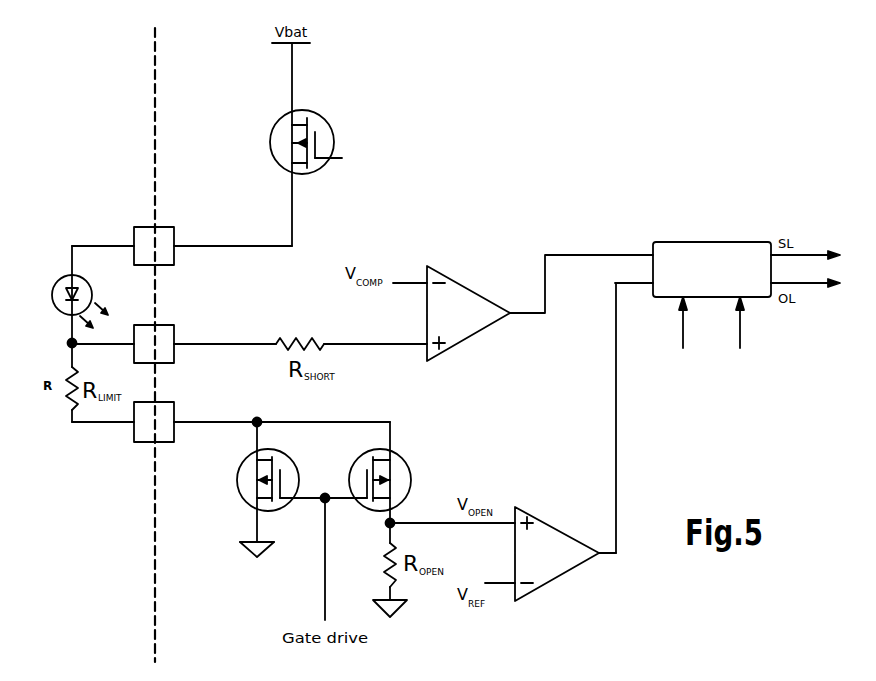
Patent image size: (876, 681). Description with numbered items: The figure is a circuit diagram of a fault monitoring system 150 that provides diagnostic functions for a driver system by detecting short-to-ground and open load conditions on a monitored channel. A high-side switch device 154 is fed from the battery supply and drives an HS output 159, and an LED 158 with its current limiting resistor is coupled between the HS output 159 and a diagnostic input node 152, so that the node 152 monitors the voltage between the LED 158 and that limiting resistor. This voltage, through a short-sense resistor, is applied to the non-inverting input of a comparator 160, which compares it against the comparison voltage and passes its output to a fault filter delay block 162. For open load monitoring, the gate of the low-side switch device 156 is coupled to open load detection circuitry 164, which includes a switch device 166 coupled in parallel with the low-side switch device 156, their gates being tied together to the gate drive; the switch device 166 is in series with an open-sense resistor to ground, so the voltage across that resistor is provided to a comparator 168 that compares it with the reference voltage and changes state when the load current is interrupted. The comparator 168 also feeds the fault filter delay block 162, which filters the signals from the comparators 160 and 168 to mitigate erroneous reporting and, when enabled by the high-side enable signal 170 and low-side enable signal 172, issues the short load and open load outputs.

The fault monitoring system 150 is at (461, 100).
The diagnostic input node 152 is at (175, 337).
The high-side switch device 154 is at (334, 137).
The low-side switch device 156 is at (175, 445).
The LED 158 is at (55, 300).
The HS output 159 is at (175, 232).
The comparator 160 is at (483, 328).
The fault filter delay block 162 is at (704, 242).
The open load detection circuitry 164 is at (373, 482).
The switch device 166 is at (402, 456).
The comparator 168 is at (551, 580).
The high-side enable signal 170 is at (683, 323).
The low-side enable signal 172 is at (741, 320).